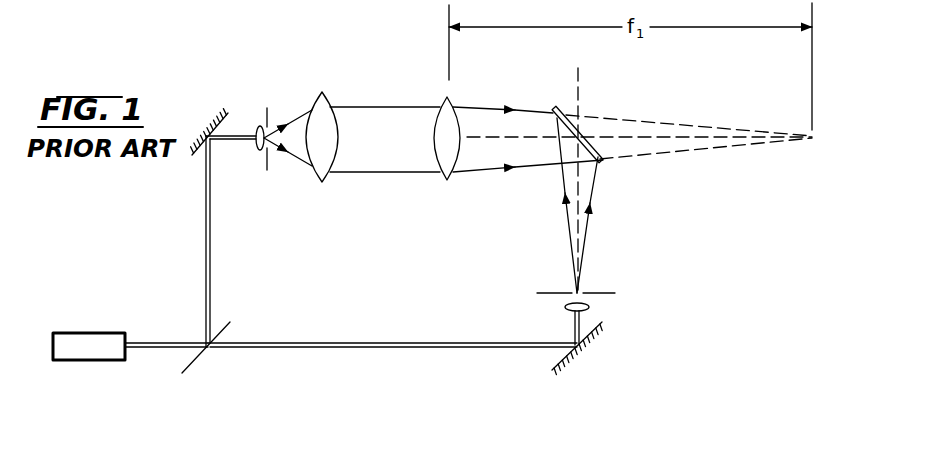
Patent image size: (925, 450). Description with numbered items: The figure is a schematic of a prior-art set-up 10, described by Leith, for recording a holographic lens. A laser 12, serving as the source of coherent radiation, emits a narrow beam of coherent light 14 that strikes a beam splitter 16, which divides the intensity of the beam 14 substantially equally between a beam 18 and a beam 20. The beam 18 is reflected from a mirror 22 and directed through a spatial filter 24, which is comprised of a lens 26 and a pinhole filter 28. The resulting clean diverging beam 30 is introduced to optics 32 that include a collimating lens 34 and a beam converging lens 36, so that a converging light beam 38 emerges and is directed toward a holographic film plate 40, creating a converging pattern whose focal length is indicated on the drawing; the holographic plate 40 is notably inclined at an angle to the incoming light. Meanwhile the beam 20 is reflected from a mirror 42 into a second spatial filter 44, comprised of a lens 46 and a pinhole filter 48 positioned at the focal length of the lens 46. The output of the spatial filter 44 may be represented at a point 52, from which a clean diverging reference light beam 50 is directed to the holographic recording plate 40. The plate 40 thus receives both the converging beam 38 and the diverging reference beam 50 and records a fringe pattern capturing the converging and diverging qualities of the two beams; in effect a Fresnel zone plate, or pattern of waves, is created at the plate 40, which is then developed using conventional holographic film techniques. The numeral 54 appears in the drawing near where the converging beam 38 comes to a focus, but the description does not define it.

The set-up 10 is at (189, 68).
The laser 12 is at (70, 344).
The beam of coherent light 14 is at (143, 345).
The beam splitter 16 is at (195, 357).
The beam 18 is at (210, 250).
The beam 20 is at (375, 348).
The mirror 22 is at (196, 157).
The spatial filter 24 is at (256, 91).
The lens 26 is at (257, 131).
The pinhole filter 28 is at (266, 108).
The clean diverging beam 30 is at (296, 148).
The optics 32 is at (383, 95).
The collimating lens 34 is at (333, 71).
The beam converging lens 36 is at (432, 125).
The converging light beam 38 is at (476, 154).
The holographic film plate 40 is at (560, 104).
The mirror 42 is at (600, 318).
The spatial filter 44 is at (608, 221).
The lens 46 is at (567, 309).
The pinhole filter 48 is at (598, 291).
The reference light beam 50 is at (590, 216).
The point 52 is at (572, 290).
The focal point 54 is at (812, 137).